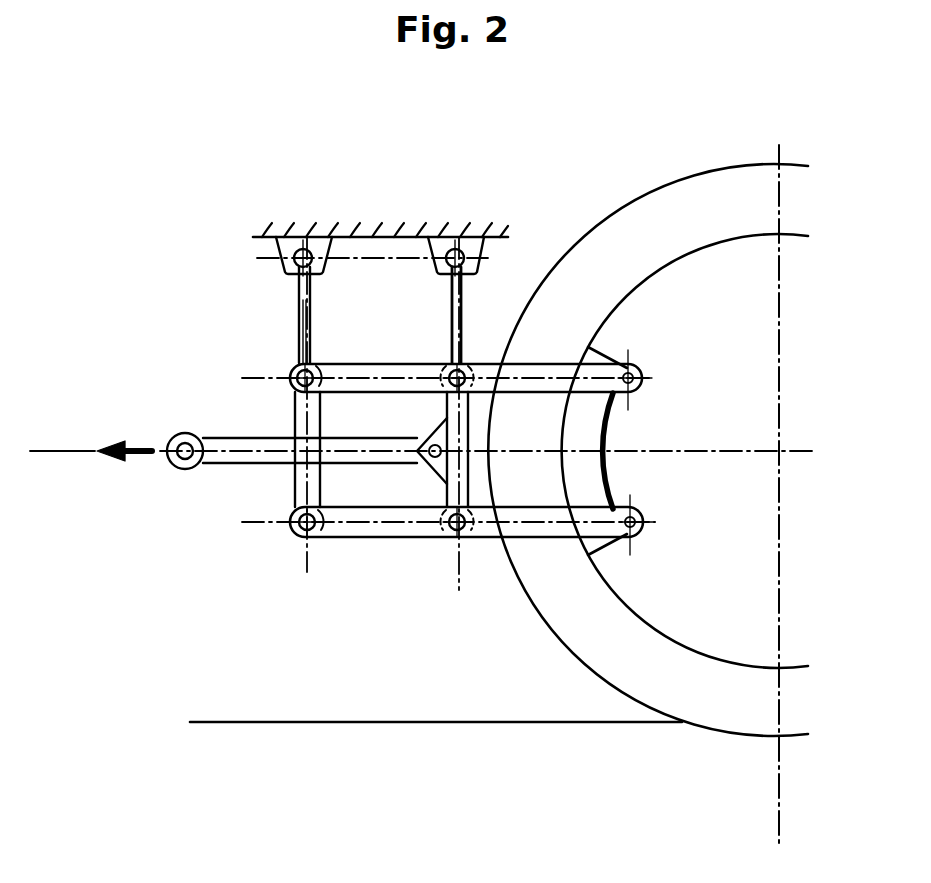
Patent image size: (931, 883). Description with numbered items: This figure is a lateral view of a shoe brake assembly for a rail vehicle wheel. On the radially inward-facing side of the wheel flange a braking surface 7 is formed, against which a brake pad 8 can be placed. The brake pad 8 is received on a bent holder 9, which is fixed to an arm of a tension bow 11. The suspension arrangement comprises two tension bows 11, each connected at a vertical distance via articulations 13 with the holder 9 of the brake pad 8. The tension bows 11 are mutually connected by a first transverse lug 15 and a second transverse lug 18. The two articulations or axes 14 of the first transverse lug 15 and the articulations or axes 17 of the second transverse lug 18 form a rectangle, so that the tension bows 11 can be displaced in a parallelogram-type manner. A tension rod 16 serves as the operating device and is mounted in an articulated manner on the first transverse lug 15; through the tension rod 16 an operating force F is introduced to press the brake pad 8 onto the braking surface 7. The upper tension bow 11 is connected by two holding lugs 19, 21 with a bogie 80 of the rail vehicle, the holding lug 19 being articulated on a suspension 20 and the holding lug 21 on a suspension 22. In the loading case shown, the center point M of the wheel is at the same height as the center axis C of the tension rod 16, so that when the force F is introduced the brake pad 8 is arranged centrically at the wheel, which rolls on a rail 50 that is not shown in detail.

The bogie 80 is at (340, 200).
The suspension 22 is at (297, 250).
The holding lug 21 is at (297, 313).
The holding lug 19 is at (452, 303).
The suspension 20 is at (456, 248).
The tension bow 11 is at (527, 370).
The braking surface 7 is at (663, 268).
The articulations 17 is at (295, 362).
The tension rod 16 is at (357, 440).
The articulations 14 is at (453, 360).
The articulations 13 is at (636, 375).
The brake pad 8 is at (587, 428).
The holder 9 is at (610, 467).
The second transverse lug 18 is at (300, 484).
The first transverse lug 15 is at (402, 491).
The rail 50 is at (413, 722).
The operating force F is at (109, 423).
The center axis C is at (743, 449).
The center point M is at (782, 452).